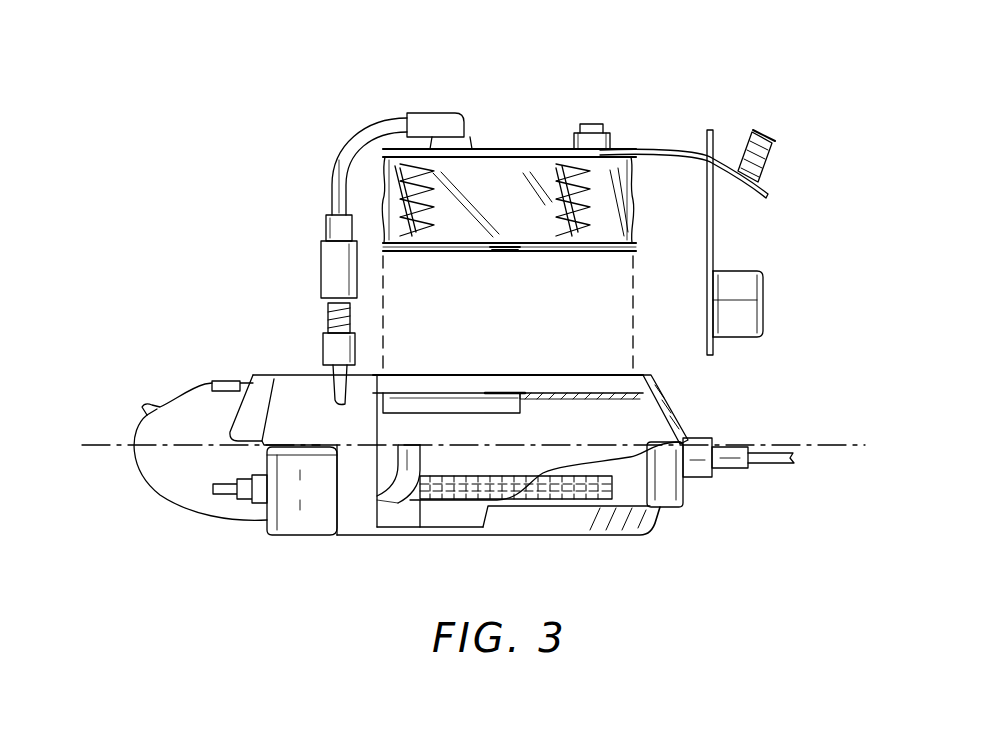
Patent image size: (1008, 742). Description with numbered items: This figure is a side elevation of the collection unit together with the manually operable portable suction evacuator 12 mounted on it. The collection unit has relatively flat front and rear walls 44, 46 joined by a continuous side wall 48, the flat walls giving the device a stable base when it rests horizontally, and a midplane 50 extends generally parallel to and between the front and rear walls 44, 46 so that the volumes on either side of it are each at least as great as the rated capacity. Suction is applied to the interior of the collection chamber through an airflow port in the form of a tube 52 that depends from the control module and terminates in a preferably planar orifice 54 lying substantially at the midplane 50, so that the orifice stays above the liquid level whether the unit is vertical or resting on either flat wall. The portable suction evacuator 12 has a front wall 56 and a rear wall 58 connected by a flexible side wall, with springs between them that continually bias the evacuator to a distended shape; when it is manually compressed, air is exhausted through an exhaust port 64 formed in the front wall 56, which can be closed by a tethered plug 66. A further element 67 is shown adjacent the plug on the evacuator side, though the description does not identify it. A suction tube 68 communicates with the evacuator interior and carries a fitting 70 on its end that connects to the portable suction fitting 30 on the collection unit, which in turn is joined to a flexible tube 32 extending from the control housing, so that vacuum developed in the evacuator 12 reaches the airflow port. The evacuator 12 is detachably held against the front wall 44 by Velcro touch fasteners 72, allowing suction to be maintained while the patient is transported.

The portable suction evacuator 12 is at (500, 137).
The portable suction fitting 30 is at (328, 345).
The flexible tube 32 is at (327, 380).
The front wall 44 is at (590, 375).
The rear wall 46 is at (570, 537).
The continuous side wall 48 is at (672, 413).
The midplane 50 is at (106, 444).
The tube 52 is at (403, 535).
The orifice 54 is at (412, 446).
The front wall 56 is at (535, 148).
The rear wall 58 is at (442, 252).
The exhaust port 64 is at (600, 123).
The plug 66 is at (777, 146).
The box 67 is at (765, 303).
The suction tube 68 is at (335, 172).
The fitting 70 is at (325, 270).
The Velcro touch fasteners 72 is at (507, 393).